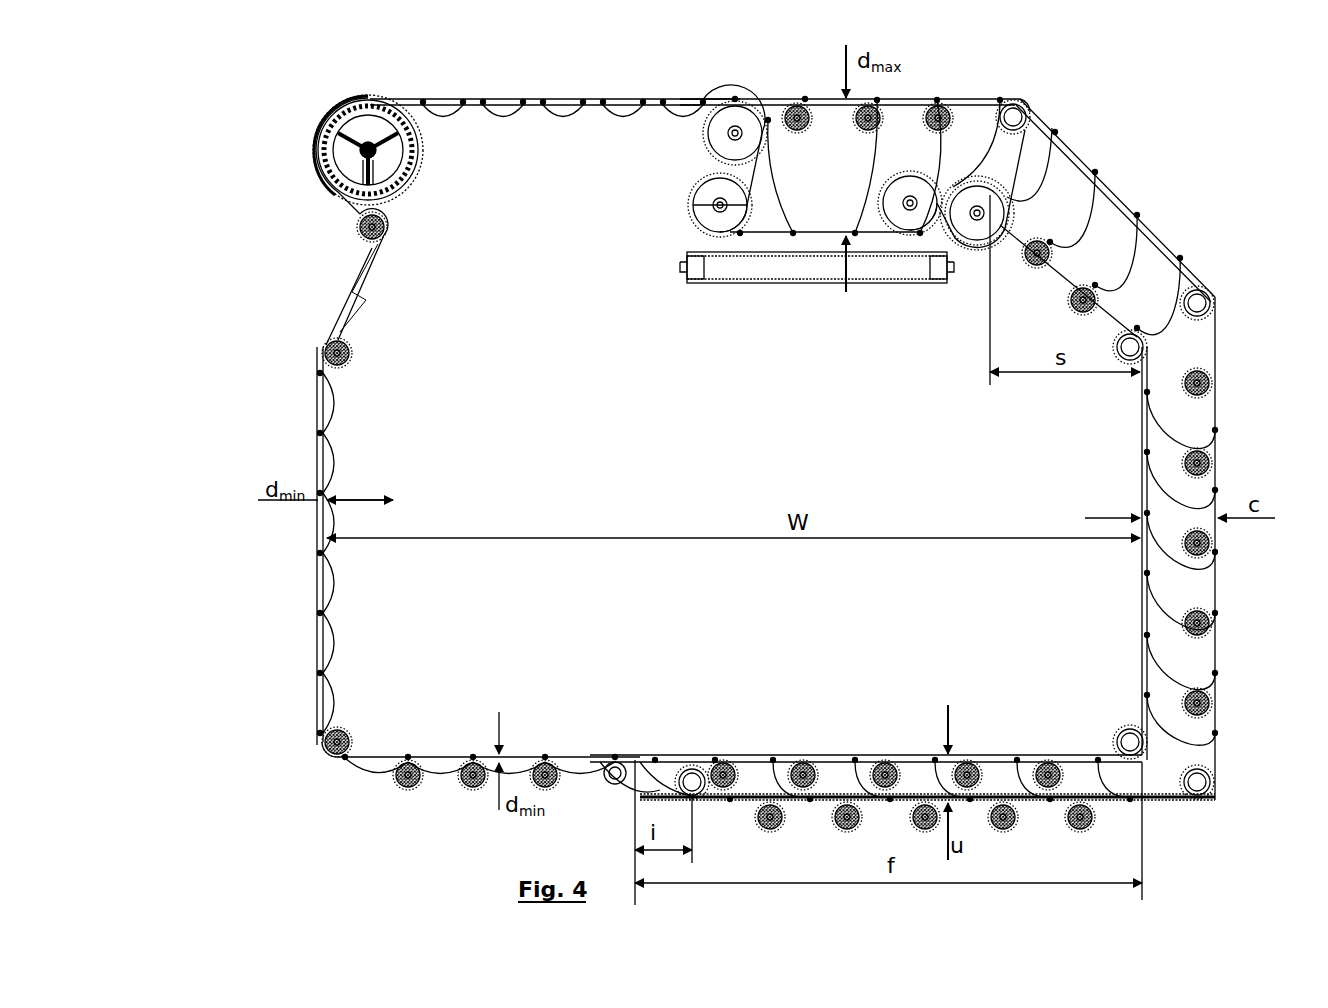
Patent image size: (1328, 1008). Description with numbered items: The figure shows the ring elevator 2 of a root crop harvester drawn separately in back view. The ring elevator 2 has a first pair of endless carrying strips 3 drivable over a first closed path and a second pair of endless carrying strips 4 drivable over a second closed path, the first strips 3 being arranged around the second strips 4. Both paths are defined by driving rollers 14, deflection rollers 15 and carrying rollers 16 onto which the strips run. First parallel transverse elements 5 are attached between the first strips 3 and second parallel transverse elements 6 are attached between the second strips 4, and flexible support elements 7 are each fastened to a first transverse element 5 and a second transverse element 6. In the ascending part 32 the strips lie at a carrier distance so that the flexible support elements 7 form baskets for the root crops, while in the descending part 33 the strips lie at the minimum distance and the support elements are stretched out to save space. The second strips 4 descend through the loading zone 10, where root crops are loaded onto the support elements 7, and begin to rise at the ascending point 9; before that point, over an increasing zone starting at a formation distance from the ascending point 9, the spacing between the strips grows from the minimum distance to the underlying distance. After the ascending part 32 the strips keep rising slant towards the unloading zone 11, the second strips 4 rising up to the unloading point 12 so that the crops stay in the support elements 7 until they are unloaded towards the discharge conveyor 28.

The ring elevator 2 is at (250, 146).
The driving rollers 14 is at (405, 168).
The descending part 33 is at (352, 592).
The carrying rollers 16 is at (470, 782).
The loading zone 10 is at (856, 736).
The ascending point 9 is at (1127, 741).
The ascending part 32 is at (1125, 567).
The second parallel transverse elements 6 is at (1145, 452).
The flexible support elements 7 is at (1145, 660).
The first parallel transverse elements 5 is at (1217, 370).
The deflection rollers 15 is at (1205, 782).
The first pair of endless carrying strips 3 is at (1120, 200).
The second pair of endless carrying strips 4 is at (1072, 280).
The unloading zone 11 is at (930, 78).
The unloading point 12 is at (988, 200).
The discharge conveyor 28 is at (880, 283).